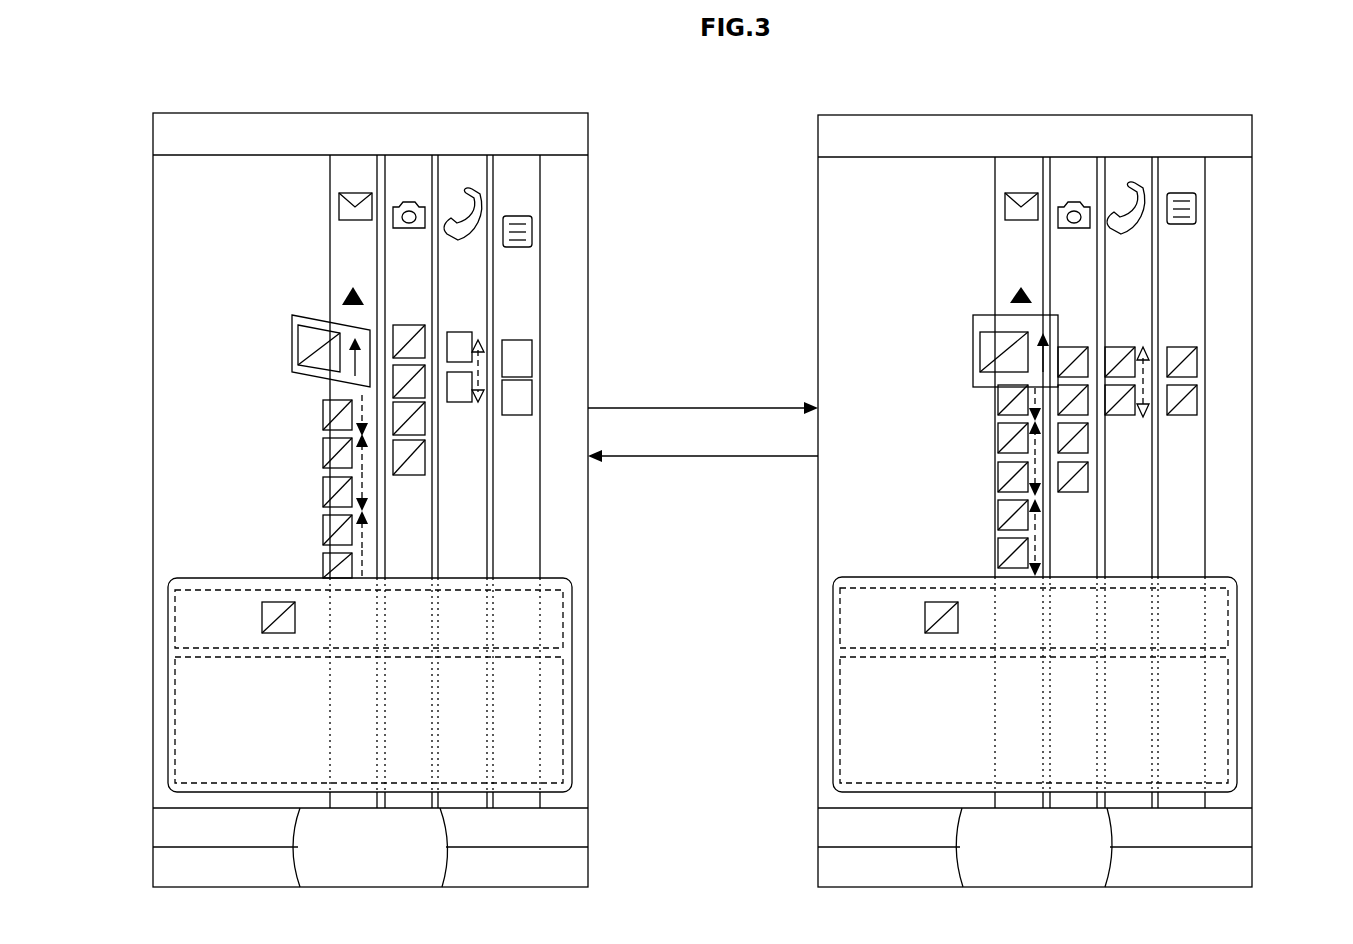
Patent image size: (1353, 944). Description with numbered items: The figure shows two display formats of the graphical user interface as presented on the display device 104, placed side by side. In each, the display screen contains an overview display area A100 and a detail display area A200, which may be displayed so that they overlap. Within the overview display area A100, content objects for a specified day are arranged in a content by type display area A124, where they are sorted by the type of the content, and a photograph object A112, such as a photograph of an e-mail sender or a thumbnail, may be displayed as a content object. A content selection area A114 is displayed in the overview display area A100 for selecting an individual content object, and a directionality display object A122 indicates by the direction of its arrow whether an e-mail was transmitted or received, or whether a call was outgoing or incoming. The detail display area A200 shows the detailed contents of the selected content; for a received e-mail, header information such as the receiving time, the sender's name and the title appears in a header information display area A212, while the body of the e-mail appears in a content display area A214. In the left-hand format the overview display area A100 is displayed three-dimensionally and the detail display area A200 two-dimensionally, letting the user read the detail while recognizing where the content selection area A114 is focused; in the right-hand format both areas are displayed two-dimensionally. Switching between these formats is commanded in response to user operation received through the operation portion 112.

The display device 104 is at (195, 113).
The overview display area A100 is at (198, 515).
The content selection area A114 is at (292, 366).
The photograph object A112 is at (323, 419).
The directionality display object A122 is at (355, 545).
The content by type display area A124 is at (525, 553).
The detail display area A200 is at (172, 650).
The header information display area A212 is at (565, 622).
The content display area A214 is at (568, 730).
The operation portion 112 is at (594, 847).